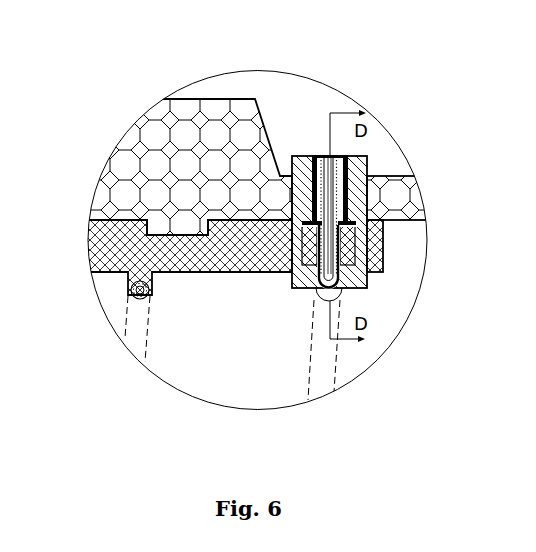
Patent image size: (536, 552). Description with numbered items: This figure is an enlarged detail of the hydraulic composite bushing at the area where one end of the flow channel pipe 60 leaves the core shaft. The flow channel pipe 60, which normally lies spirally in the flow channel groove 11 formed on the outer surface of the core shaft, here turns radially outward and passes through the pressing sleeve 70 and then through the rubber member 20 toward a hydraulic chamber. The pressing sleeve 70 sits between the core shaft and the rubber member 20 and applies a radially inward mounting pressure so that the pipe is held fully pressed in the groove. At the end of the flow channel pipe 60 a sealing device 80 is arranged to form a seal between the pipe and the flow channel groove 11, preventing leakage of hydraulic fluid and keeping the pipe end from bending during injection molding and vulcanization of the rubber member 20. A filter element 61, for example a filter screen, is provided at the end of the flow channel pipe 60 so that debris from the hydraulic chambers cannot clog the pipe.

The flow channel groove 11 is at (317, 357).
The rubber member 20 is at (150, 165).
The flow channel pipe 60 is at (130, 292).
The filter element 61 is at (350, 160).
The pressing sleeve 70 is at (92, 228).
The sealing device 80 is at (300, 165).